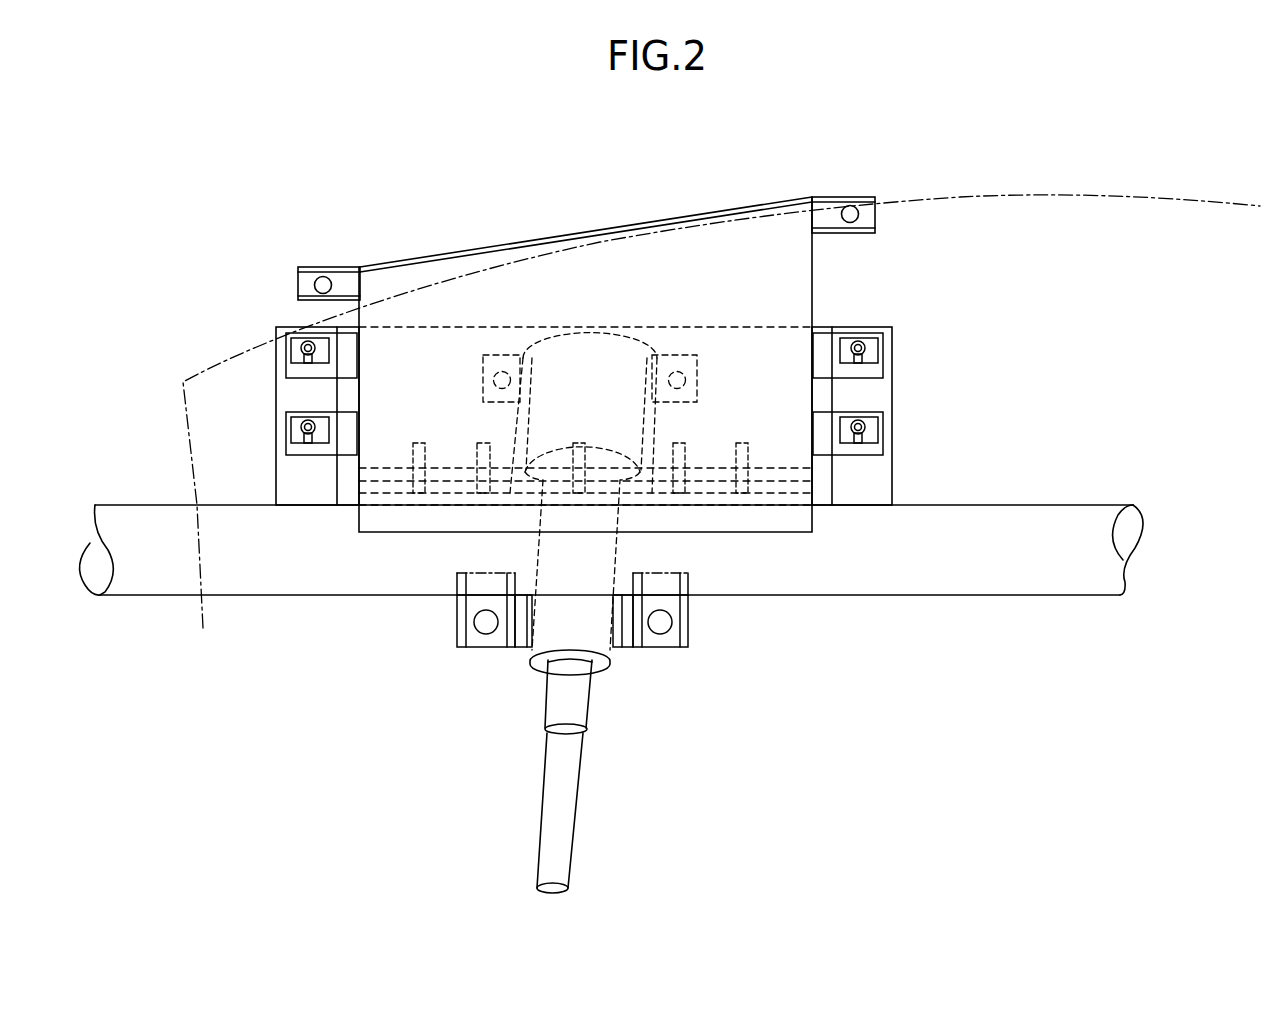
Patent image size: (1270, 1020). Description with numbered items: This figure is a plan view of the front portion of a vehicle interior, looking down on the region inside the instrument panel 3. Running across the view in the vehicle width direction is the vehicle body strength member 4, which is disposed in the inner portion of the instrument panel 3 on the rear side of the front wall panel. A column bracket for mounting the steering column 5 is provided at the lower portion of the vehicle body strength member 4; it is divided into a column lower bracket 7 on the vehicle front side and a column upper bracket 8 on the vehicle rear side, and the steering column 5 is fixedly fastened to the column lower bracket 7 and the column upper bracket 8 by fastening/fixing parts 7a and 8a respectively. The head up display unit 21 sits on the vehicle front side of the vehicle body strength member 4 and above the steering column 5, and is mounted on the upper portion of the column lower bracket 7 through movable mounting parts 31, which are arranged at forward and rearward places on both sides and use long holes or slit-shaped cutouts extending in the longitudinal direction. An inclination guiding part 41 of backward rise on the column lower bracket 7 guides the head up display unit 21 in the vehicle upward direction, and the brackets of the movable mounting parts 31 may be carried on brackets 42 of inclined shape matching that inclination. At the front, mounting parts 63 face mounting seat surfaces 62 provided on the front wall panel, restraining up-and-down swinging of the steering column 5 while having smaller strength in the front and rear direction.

The instrument panel 3 is at (1074, 198).
The vehicle body strength member 4 is at (1019, 596).
The steering column 5 is at (580, 802).
The column lower bracket 7 is at (409, 325).
The fastening/fixing part 7a is at (502, 355).
The column upper bracket 8 is at (457, 578).
The fastening/fixing part 8a is at (484, 634).
The head up display unit 21 is at (539, 239).
The movable mounting part 31 is at (287, 433).
The inclination guiding part 41 is at (470, 488).
The bracket 42 is at (277, 462).
The mounting seat surface 62 is at (570, 198).
The mounting part 63 is at (313, 266).